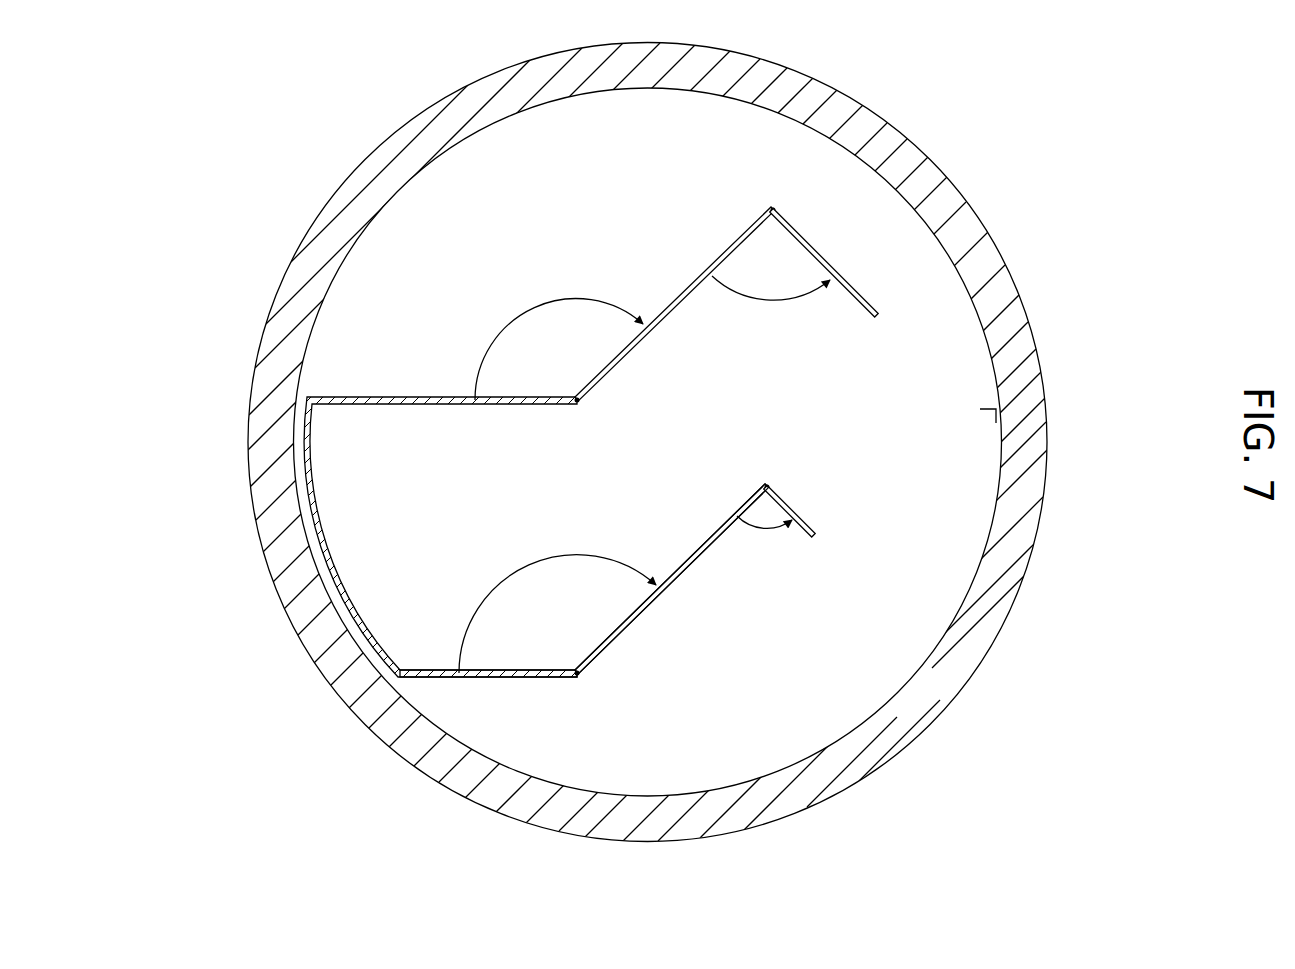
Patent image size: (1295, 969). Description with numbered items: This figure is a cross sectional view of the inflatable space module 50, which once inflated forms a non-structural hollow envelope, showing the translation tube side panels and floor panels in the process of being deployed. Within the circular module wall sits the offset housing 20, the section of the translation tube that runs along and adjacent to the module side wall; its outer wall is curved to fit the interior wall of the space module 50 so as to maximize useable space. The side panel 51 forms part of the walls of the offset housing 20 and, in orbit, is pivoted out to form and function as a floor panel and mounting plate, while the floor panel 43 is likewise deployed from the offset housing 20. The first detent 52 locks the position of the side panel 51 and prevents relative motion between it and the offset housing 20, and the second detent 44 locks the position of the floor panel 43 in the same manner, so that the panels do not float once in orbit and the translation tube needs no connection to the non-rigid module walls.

The offset housing 20 is at (437, 677).
The floor panel 43 is at (688, 289).
The second detent 44 is at (775, 210).
The space module 50 is at (970, 213).
The side panel 51 is at (672, 578).
The first detent 52 is at (575, 672).